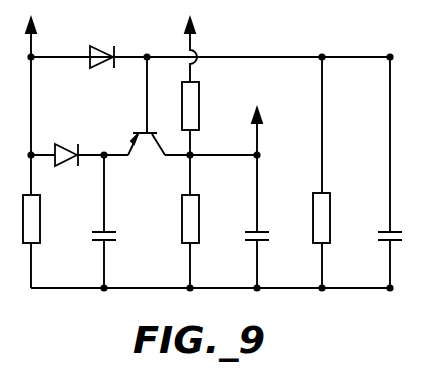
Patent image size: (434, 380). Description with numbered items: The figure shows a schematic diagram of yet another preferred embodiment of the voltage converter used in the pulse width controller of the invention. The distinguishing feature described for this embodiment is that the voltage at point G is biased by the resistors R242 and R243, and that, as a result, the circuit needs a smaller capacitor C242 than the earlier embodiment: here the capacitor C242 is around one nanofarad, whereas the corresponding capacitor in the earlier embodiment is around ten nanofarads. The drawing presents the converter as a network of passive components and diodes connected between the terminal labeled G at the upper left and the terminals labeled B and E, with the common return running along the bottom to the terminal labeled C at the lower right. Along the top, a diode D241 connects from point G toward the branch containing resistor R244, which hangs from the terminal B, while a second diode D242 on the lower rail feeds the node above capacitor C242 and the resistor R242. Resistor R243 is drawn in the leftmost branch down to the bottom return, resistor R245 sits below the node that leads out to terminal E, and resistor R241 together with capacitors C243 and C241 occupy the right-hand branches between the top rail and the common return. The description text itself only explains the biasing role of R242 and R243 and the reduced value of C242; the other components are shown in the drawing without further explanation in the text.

The diode D241 is at (110, 71).
The diode D242 is at (70, 171).
The resistor R242 is at (125, 106).
The resistor R244 is at (219, 93).
The resistor R245 is at (217, 221).
The resistor R243 is at (55, 236).
The resistor R241 is at (345, 172).
The capacitor C242 is at (135, 221).
The capacitor C243 is at (279, 221).
The capacitor C241 is at (368, 172).
The point G is at (43, 36).
The base terminal B is at (201, 28).
The emitter terminal E is at (266, 129).
The collector terminal C is at (372, 305).